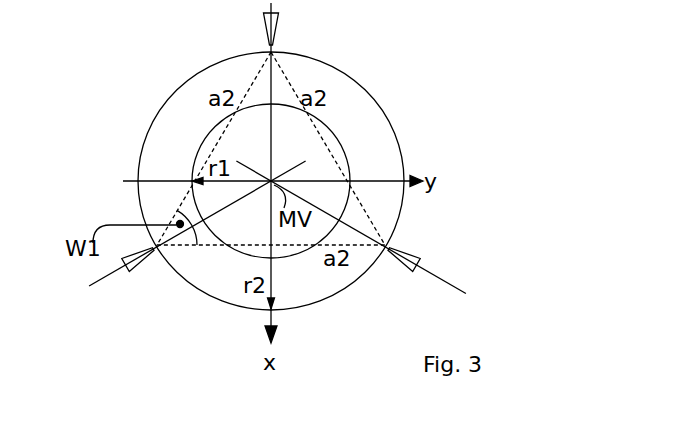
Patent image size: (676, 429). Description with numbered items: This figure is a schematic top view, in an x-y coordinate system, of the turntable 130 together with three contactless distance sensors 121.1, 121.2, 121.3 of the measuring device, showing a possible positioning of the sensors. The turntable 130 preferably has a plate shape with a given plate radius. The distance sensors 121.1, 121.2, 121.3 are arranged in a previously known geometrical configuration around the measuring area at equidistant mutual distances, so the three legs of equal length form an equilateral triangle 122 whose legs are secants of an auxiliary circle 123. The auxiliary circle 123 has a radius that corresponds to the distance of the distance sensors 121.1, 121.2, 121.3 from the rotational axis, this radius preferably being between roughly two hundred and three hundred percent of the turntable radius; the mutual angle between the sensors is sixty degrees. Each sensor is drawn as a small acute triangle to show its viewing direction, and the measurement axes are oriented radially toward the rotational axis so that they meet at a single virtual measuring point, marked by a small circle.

The distance sensor 121.1 is at (142, 257).
The distance sensor 121.2 is at (270, 42).
The distance sensor 121.3 is at (405, 263).
The equilateral triangle 122 is at (364, 212).
The auxiliary circle 123 is at (388, 121).
The turntable 130 is at (348, 166).